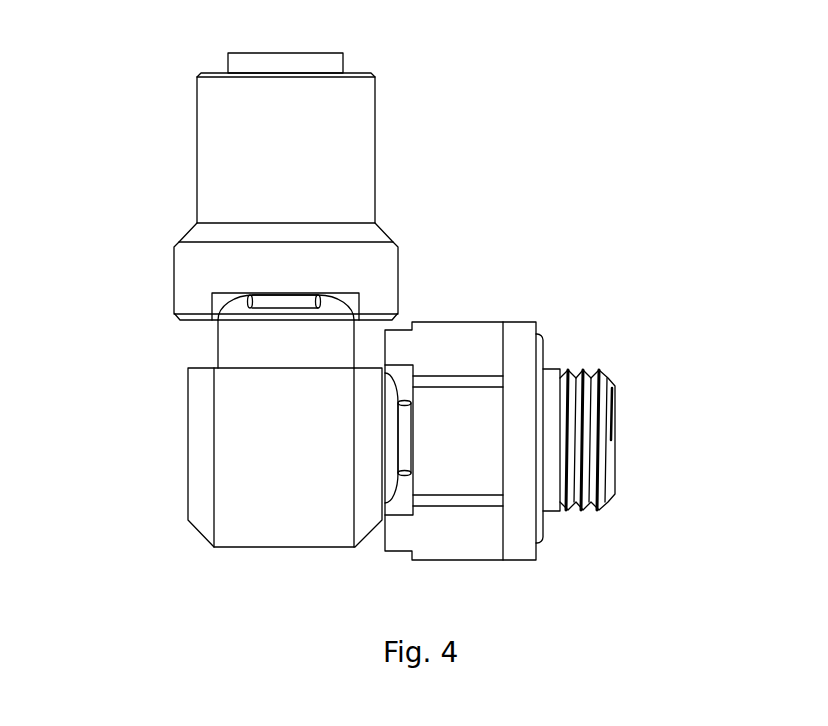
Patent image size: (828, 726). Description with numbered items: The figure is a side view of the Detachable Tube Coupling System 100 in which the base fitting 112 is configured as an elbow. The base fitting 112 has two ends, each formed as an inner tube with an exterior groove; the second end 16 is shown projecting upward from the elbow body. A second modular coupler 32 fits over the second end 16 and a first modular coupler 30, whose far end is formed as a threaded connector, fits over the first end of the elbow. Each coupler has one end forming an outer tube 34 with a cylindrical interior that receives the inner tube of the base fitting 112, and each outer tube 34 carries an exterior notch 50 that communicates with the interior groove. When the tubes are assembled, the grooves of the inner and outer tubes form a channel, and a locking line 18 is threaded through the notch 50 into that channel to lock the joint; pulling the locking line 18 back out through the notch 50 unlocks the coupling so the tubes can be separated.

The Detachable Tube Coupling System 100 is at (535, 137).
The second modular coupler 32 is at (375, 93).
The outer tube 34 is at (398, 258).
The exterior notch 50 is at (350, 303).
The locking line 18 is at (247, 303).
The second end 16 is at (217, 345).
The base fitting 112 is at (213, 547).
The first modular coupler 30 is at (535, 560).